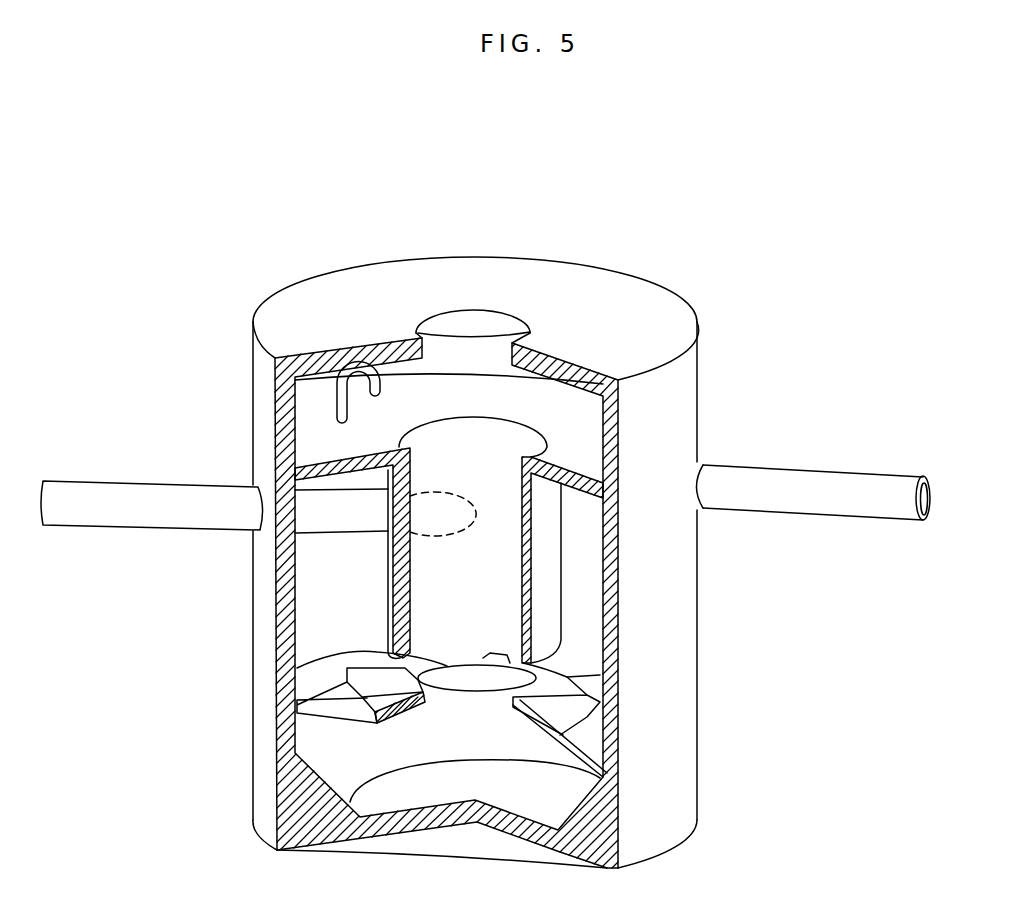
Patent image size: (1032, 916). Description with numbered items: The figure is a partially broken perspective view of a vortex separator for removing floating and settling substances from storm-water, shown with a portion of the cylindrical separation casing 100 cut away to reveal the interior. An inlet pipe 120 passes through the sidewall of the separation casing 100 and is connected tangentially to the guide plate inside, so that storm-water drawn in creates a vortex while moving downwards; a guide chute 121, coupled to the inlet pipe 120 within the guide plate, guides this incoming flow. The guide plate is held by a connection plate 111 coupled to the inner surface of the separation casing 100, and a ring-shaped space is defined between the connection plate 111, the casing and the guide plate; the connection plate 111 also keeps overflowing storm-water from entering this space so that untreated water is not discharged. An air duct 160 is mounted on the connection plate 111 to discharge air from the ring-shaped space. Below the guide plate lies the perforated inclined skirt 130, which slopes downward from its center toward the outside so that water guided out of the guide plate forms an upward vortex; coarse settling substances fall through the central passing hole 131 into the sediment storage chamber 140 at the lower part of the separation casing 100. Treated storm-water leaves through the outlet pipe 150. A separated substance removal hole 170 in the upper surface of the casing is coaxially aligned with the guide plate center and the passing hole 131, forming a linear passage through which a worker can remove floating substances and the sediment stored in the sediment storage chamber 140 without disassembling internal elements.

The separation casing 100 is at (393, 280).
The connection plate 111 is at (573, 479).
The inlet pipe 120 is at (180, 500).
The guide chute 121 is at (440, 520).
The perforated inclined skirt 130 is at (474, 667).
The passing hole 131 is at (487, 655).
The sediment storage chamber 140 is at (474, 745).
The outlet pipe 150 is at (800, 493).
The air duct 160 is at (337, 407).
The separated substance removal hole 170 is at (472, 322).